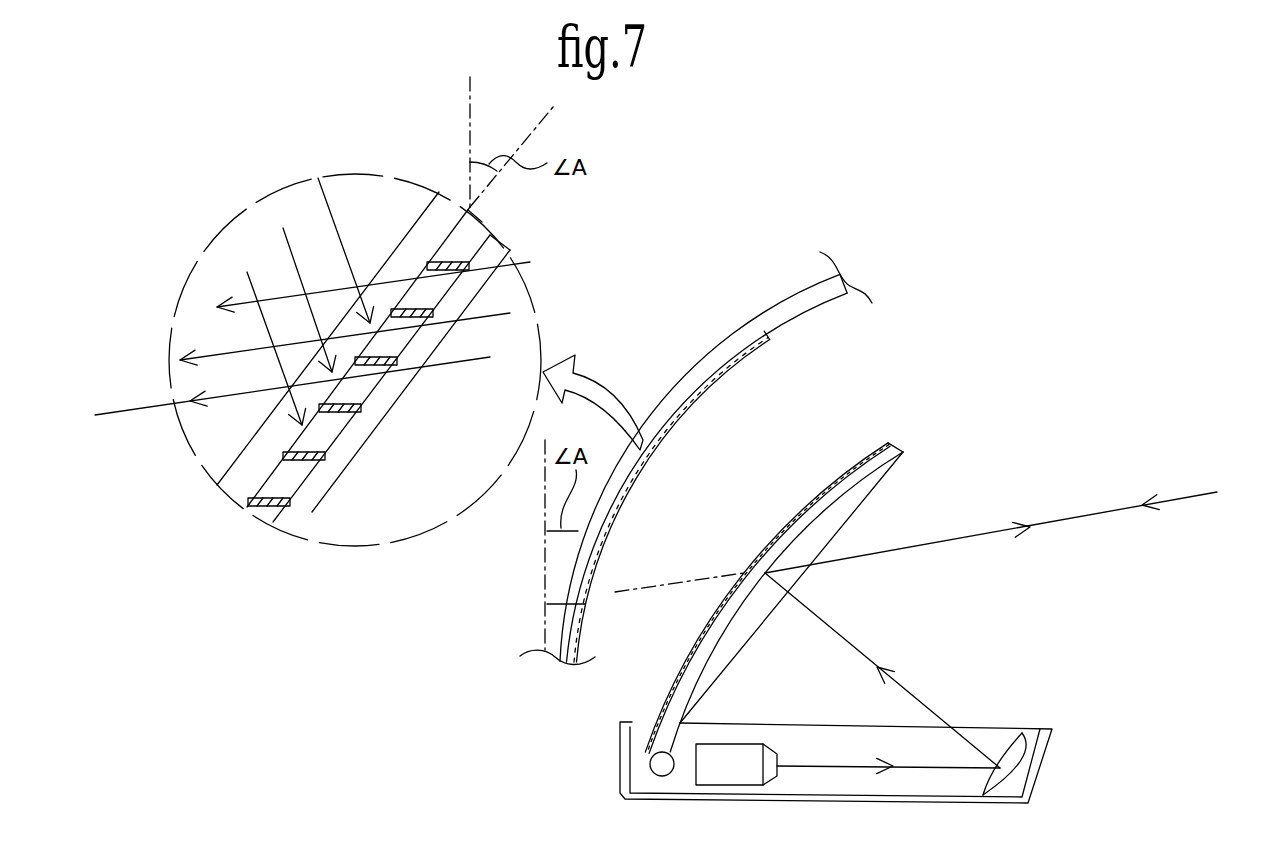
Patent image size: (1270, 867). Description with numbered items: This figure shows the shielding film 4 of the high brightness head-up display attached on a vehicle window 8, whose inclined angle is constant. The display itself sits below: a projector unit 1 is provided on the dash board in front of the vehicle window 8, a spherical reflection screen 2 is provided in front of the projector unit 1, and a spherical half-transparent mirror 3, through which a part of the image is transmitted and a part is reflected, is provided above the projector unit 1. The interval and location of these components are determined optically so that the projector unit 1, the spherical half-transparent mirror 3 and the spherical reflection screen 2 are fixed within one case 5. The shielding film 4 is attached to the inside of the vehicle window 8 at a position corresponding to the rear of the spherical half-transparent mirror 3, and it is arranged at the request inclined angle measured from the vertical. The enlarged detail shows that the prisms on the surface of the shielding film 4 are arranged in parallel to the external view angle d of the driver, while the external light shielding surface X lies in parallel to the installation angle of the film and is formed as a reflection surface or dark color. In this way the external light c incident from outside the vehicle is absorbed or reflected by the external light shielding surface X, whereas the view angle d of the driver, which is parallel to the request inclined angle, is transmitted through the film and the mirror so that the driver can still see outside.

The projector unit 1 is at (733, 777).
The spherical reflection screen 2 is at (1037, 760).
The spherical half-transparent mirror 3 is at (892, 450).
The shielding film 4 is at (468, 448).
The case 5 is at (898, 800).
The vehicle window 8 is at (800, 298).
The external light c is at (304, 284).
The external view angle d is at (672, 412).
The external light shielding surface X is at (292, 385).